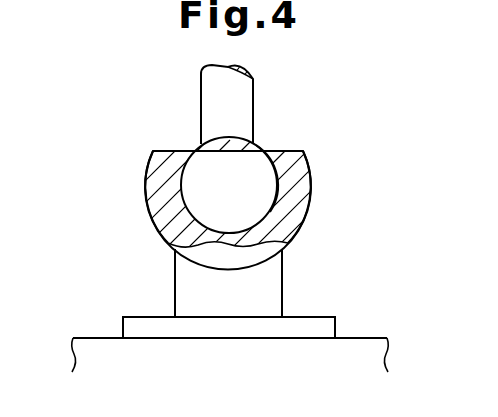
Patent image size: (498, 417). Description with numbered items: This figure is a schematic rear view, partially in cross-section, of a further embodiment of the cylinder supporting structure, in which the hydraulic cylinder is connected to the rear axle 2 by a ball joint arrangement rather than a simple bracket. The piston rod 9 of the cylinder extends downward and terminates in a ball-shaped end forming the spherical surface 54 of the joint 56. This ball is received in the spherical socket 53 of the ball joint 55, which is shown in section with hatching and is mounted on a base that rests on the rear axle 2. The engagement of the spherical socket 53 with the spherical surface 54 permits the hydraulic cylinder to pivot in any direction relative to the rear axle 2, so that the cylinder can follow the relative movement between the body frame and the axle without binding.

The rear axle 2 is at (364, 338).
The piston rod 9 is at (254, 88).
The spherical socket 53 is at (190, 210).
The spherical surface 54 is at (258, 159).
The ball joint 55 is at (283, 275).
The joint 56 is at (195, 150).